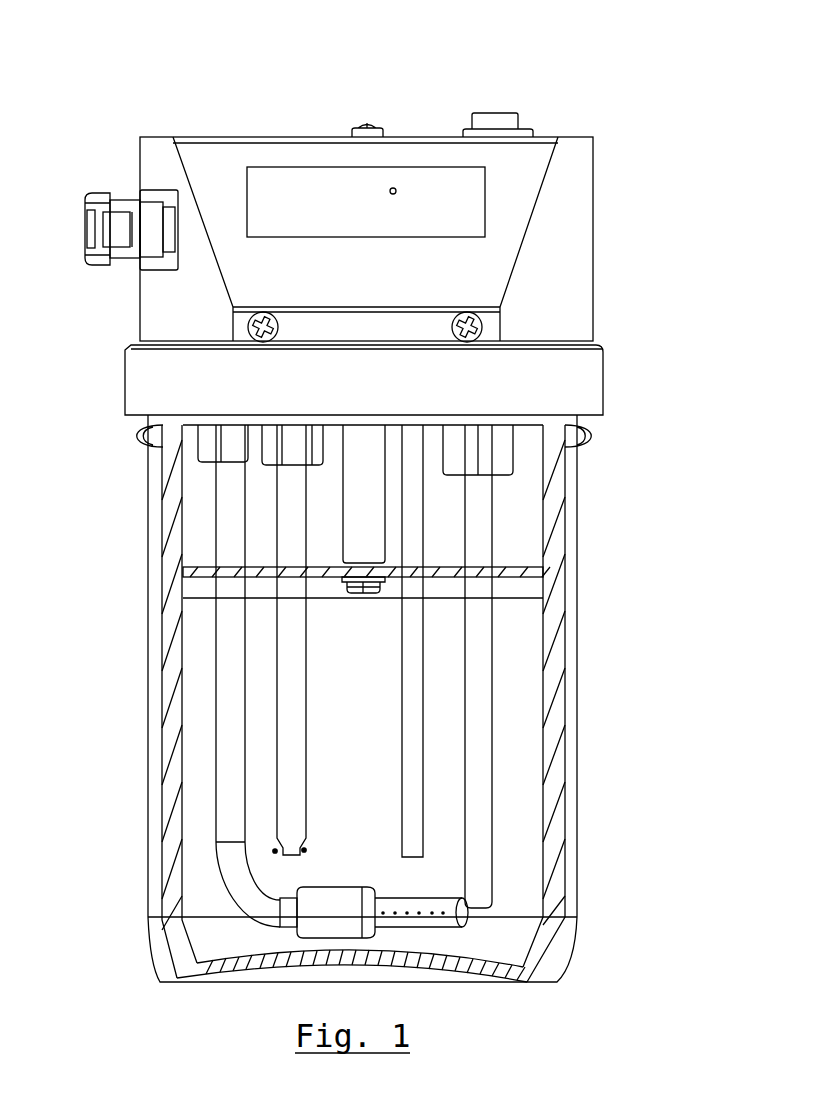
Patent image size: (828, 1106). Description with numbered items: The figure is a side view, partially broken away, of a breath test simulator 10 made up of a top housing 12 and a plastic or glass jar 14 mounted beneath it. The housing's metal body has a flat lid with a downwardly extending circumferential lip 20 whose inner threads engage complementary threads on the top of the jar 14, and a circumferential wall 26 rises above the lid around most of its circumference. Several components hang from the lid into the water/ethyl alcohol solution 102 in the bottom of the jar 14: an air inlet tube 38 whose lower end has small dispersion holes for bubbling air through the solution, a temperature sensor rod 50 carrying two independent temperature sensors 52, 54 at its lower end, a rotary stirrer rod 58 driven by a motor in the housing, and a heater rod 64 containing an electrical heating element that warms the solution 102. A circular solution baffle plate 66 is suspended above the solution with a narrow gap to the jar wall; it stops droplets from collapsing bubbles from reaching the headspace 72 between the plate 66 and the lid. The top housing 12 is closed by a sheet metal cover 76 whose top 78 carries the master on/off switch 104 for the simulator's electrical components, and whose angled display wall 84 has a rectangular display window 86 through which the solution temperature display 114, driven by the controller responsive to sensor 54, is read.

The breath test simulator 10 is at (172, 58).
The top housing 12 is at (630, 240).
The jar 14 is at (584, 604).
The circumferential lip 20 is at (607, 383).
The circumferential wall 26 is at (593, 182).
The air inlet tube 38 is at (216, 752).
The temperature sensor rod 50 is at (306, 656).
The temperature sensor 52 is at (275, 851).
The temperature sensor 54 is at (333, 848).
The rotary stirrer rod 58 is at (363, 715).
The heater rod 64 is at (492, 752).
The solution baffle plate 66 is at (442, 572).
The headspace 72 is at (535, 525).
The sheet metal cover 76 is at (493, 263).
The top 78 is at (158, 137).
The display wall 84 is at (293, 283).
The display window 86 is at (485, 196).
The water/ethyl alcohol solution 102 is at (378, 748).
The master on/off switch 104 is at (521, 118).
The solution temperature display 114 is at (325, 185).